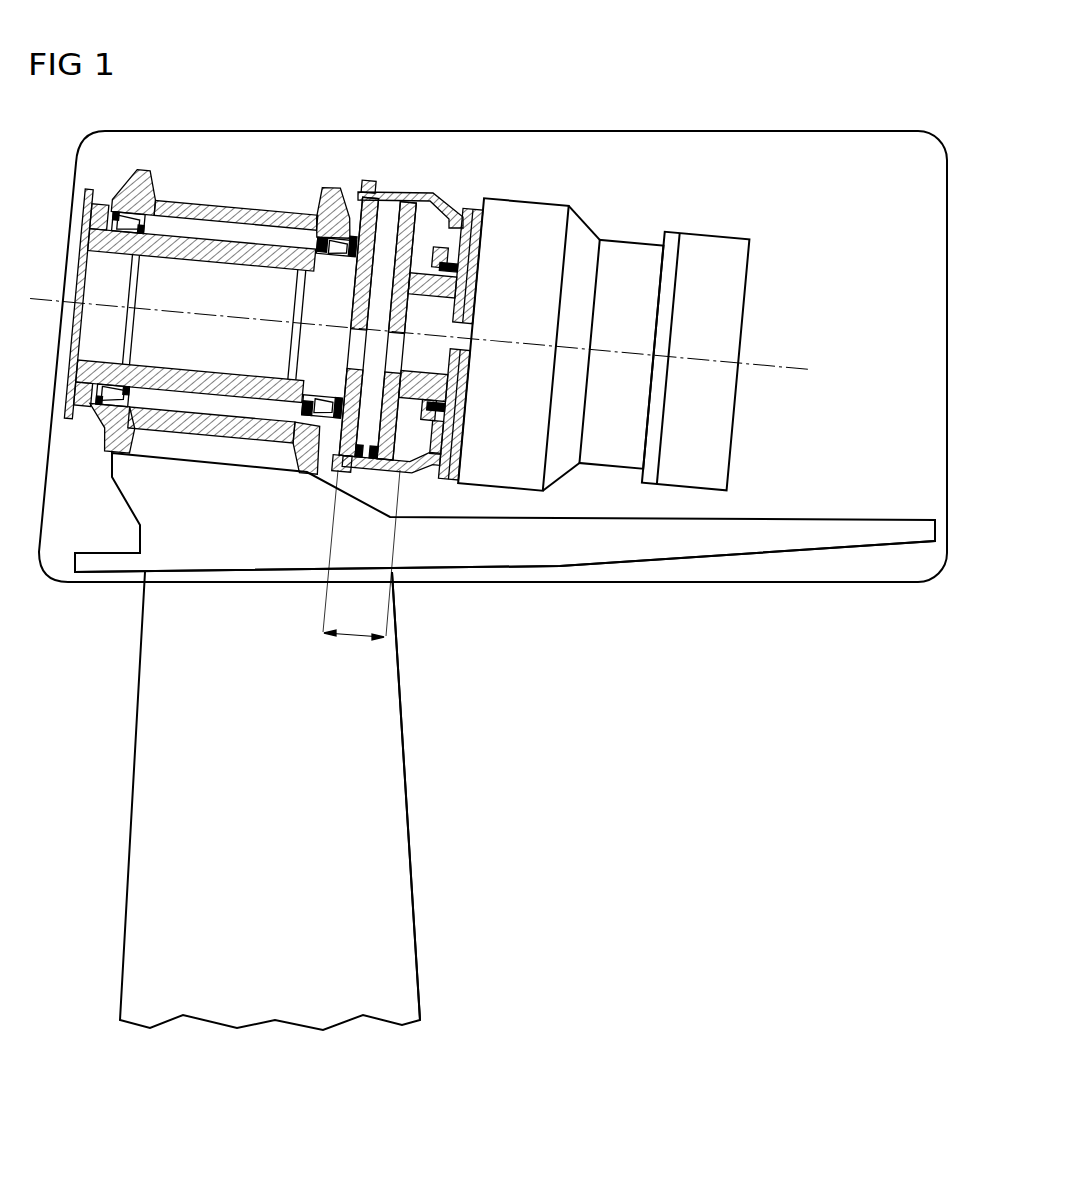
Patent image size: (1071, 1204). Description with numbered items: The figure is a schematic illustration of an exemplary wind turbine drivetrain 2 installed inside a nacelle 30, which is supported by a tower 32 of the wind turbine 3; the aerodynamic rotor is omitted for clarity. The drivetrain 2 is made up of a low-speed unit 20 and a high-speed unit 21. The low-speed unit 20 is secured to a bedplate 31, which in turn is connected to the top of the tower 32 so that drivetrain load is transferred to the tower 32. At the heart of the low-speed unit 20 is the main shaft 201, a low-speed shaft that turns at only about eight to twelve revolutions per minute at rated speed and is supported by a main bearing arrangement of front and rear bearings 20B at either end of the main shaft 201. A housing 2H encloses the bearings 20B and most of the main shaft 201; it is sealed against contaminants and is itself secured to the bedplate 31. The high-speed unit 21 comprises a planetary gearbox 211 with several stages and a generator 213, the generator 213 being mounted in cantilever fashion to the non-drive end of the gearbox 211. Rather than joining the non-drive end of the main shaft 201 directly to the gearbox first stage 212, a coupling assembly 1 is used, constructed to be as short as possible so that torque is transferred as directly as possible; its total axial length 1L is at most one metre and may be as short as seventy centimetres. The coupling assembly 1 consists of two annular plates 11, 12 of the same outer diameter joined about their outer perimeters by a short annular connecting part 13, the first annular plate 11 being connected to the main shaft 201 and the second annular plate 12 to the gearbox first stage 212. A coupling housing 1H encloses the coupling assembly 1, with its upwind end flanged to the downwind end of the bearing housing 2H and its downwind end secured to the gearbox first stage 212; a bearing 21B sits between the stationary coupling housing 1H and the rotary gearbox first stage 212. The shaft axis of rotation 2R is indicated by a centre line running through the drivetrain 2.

The coupling assembly 1 is at (372, 496).
The coupling housing 1H is at (415, 470).
The axial length 1L is at (355, 640).
The wind turbine drivetrain 2 is at (778, 190).
The housing 2H is at (200, 420).
The rotation axis 2R is at (797, 366).
The wind turbine 3 is at (740, 740).
The annular plate 11 is at (372, 228).
The annular plate 12 is at (412, 230).
The annular connecting part 13 is at (408, 199).
The low-speed unit 20 is at (240, 155).
The bearings 20B is at (122, 222).
The high-speed unit 21 is at (612, 490).
The bearing 21B is at (445, 270).
The nacelle 30 is at (790, 584).
The bedplate 31 is at (690, 545).
The tower 32 is at (395, 814).
The main shaft 201 is at (197, 250).
The planetary gearbox 211 is at (530, 213).
The gearbox first stage 212 is at (452, 390).
The generator 213 is at (720, 405).